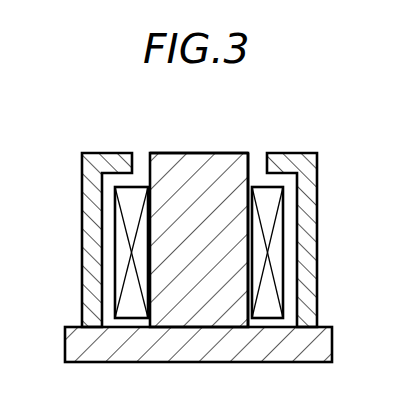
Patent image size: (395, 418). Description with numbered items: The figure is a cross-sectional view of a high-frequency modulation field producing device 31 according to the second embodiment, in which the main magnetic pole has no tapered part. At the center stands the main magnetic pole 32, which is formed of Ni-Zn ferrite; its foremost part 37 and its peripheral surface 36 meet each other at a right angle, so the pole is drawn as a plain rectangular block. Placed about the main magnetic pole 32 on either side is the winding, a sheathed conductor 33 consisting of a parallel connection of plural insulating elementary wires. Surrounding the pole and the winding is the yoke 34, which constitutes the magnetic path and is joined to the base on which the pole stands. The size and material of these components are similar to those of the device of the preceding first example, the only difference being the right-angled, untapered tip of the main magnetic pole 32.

The high-frequency modulation field producing device 31 is at (281, 396).
The main magnetic pole 32 is at (172, 165).
The sheathed conductor 33 is at (123, 246).
The yoke 34 is at (306, 211).
The peripheral surface 36 is at (251, 160).
The foremost part 37 is at (220, 160).